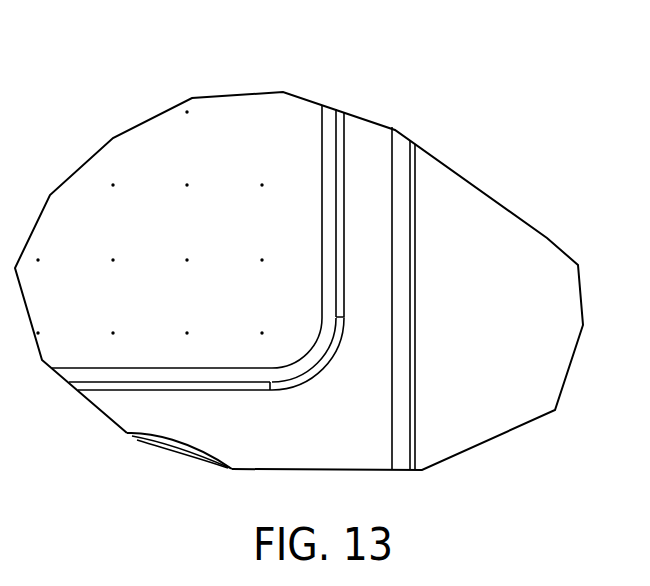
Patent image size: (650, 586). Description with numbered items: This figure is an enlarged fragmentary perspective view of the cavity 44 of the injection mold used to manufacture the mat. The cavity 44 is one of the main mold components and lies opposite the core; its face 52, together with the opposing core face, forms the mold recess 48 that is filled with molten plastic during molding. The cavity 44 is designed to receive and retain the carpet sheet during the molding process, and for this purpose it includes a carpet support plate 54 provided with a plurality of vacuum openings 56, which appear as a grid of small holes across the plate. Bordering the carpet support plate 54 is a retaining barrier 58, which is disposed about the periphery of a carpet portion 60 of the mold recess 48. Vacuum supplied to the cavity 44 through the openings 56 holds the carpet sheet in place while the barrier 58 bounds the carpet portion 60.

The cavity 44 is at (415, 352).
The mold recess 48 is at (313, 218).
The cavity face 52 is at (288, 398).
The carpet support plate 54 is at (163, 256).
The vacuum openings 56 is at (187, 185).
The retaining barrier 58 is at (343, 290).
The carpet portion 60 is at (308, 193).